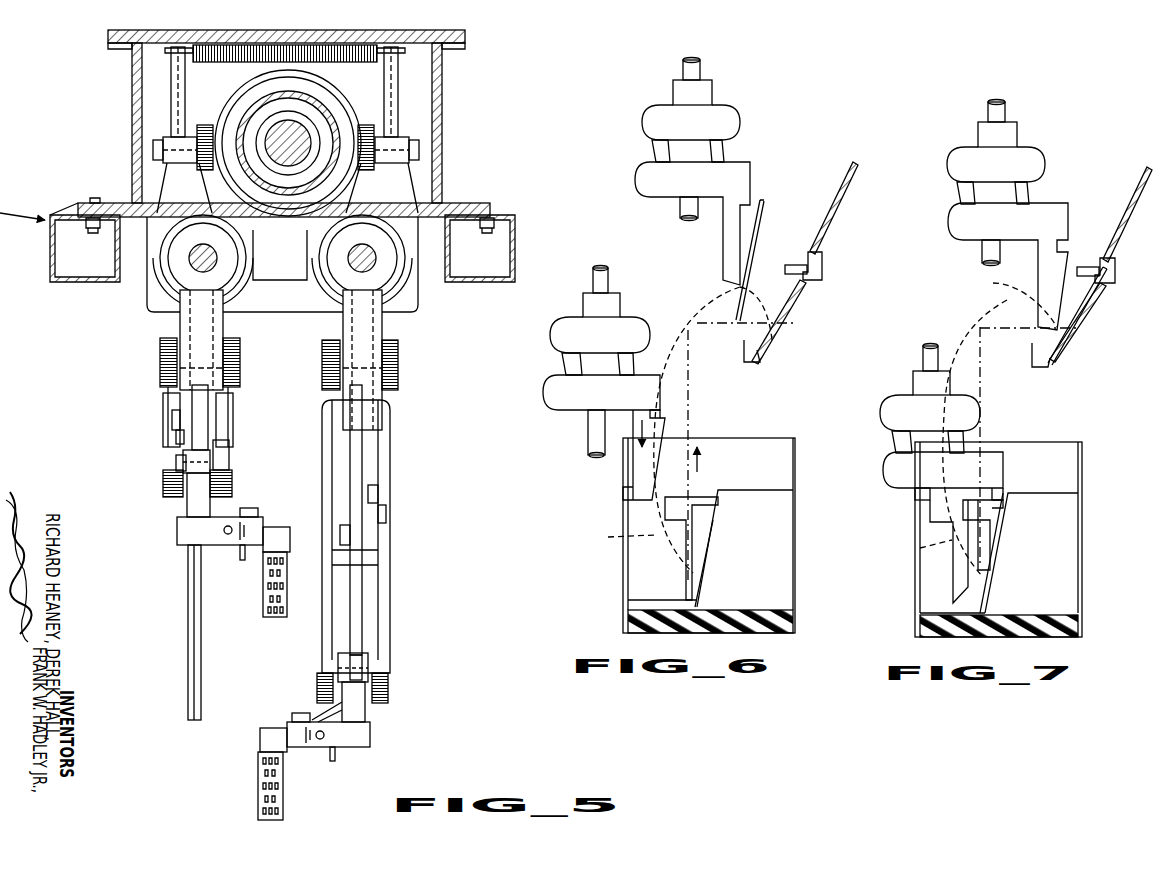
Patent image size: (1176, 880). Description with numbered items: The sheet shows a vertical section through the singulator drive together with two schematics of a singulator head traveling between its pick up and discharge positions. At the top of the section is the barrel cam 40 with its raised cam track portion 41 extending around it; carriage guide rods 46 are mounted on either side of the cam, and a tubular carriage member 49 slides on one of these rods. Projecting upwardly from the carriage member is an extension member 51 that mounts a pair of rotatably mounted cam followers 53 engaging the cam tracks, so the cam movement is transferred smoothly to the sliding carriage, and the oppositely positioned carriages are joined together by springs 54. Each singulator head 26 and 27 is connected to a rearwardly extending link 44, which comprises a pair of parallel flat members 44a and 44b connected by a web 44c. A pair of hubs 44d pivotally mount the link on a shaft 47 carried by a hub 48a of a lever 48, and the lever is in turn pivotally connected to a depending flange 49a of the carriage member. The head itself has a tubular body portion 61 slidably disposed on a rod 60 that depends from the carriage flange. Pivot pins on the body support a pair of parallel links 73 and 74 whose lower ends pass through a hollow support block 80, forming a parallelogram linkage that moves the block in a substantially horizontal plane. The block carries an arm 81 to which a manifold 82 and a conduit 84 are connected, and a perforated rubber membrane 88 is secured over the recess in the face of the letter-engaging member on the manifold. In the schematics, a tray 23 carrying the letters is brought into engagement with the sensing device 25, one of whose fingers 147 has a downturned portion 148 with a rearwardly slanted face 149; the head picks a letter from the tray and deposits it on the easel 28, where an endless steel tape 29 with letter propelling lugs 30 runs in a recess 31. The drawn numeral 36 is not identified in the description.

In FIG. 6, the tray 23 is at (693, 517).
In FIG. 7, the tray 23 is at (982, 520).
In FIG. 6, the sensing device 25 is at (690, 590).
In FIG. 7, the sensing device 25 is at (950, 587).
In FIG. 5, the singulator head 26 is at (256, 788).
In FIG. 6, the singulator head 26 is at (553, 403).
In FIG. 7, the singulator head 26 is at (885, 468).
In FIG. 5, the singulator head 27 is at (178, 542).
In FIG. 6, the singulator head 27 is at (760, 173).
In FIG. 7, the singulator head 27 is at (1070, 205).
In FIG. 6, the easel 28 is at (846, 181).
In FIG. 7, the easel 28 is at (1130, 191).
In FIG. 6, the endless steel tape 29 is at (823, 256).
In FIG. 7, the endless steel tape 29 is at (1115, 258).
In FIG. 6, the letter propelling lug 30 is at (812, 282).
In FIG. 7, the letter propelling lug 30 is at (1105, 284).
In FIG. 6, the recess 31 is at (808, 269).
In FIG. 7, the recess 31 is at (1100, 272).
In FIG. 5, the drive shaft 36 is at (286, 170).
In FIG. 5, the barrel cam 40 is at (247, 100).
In FIG. 5, the raised cam track portion 41 is at (336, 92).
In FIG. 5, the link 44 is at (165, 452).
In FIG. 5, the flat member 44a is at (168, 394).
In FIG. 5, the flat member 44b is at (230, 398).
In FIG. 5, the web 44c is at (176, 468).
In FIG. 5, the hub 44d is at (237, 443).
In FIG. 5, the carriage guide rod 46 is at (350, 258).
In FIG. 5, the shaft 47 is at (172, 418).
In FIG. 5, the lever 48 is at (210, 393).
In FIG. 5, the hub 48a is at (176, 440).
In FIG. 5, the tubular carriage member 49 is at (180, 270).
In FIG. 5, the depending flange 49a is at (190, 334).
In FIG. 5, the extension member 51 is at (163, 172).
In FIG. 5, the cam follower 53 is at (165, 140).
In FIG. 5, the spring 54 is at (304, 44).
In FIG. 5, the rod 60 is at (188, 608).
In FIG. 6, the rod 60 is at (700, 68).
In FIG. 7, the rod 60 is at (983, 225).
In FIG. 5, the tubular body portion 61 is at (370, 660).
In FIG. 6, the tubular body portion 61 is at (673, 88).
In FIG. 7, the tubular body portion 61 is at (971, 252).
In FIG. 5, the link 73 is at (190, 506).
In FIG. 6, the link 73 is at (723, 151).
In FIG. 7, the link 73 is at (997, 317).
In FIG. 6, the link 74 is at (652, 151).
In FIG. 7, the link 74 is at (932, 317).
In FIG. 5, the hollow support block 80 is at (180, 528).
In FIG. 5, the arm 81 is at (242, 547).
In FIG. 5, the manifold 82 is at (286, 520).
In FIG. 5, the conduit 84 is at (262, 498).
In FIG. 5, the perforated rubber membrane 88 is at (264, 583).
In FIG. 6, the finger 147 is at (698, 500).
In FIG. 7, the finger 147 is at (985, 500).
In FIG. 6, the downturned portion 148 is at (702, 545).
In FIG. 7, the downturned portion 148 is at (960, 571).
In FIG. 6, the rearwardly slanted face 149 is at (716, 522).
In FIG. 7, the rearwardly slanted face 149 is at (1010, 527).